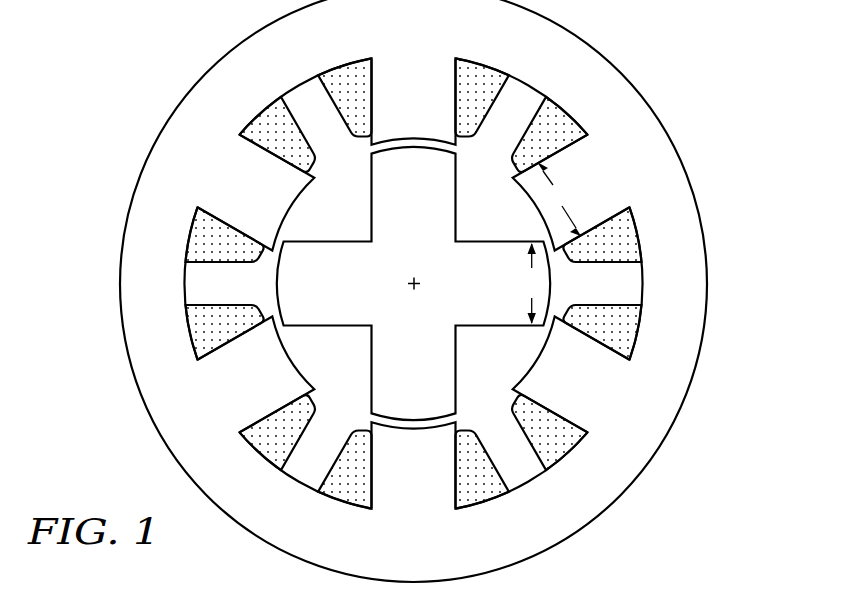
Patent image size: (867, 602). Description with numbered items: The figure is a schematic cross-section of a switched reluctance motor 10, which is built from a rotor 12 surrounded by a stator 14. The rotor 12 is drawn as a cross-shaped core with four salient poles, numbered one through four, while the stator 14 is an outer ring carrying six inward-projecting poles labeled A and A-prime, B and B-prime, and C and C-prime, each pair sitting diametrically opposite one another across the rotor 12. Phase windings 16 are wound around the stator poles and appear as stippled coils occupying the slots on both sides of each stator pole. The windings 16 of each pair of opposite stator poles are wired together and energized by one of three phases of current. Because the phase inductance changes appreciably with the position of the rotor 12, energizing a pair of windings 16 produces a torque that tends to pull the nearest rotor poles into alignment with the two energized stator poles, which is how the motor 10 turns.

The switched reluctance (SR) motor 10 is at (436, 291).
The rotor 12 is at (447, 220).
The stator 14 is at (700, 285).
The phase windings 16 is at (479, 64).